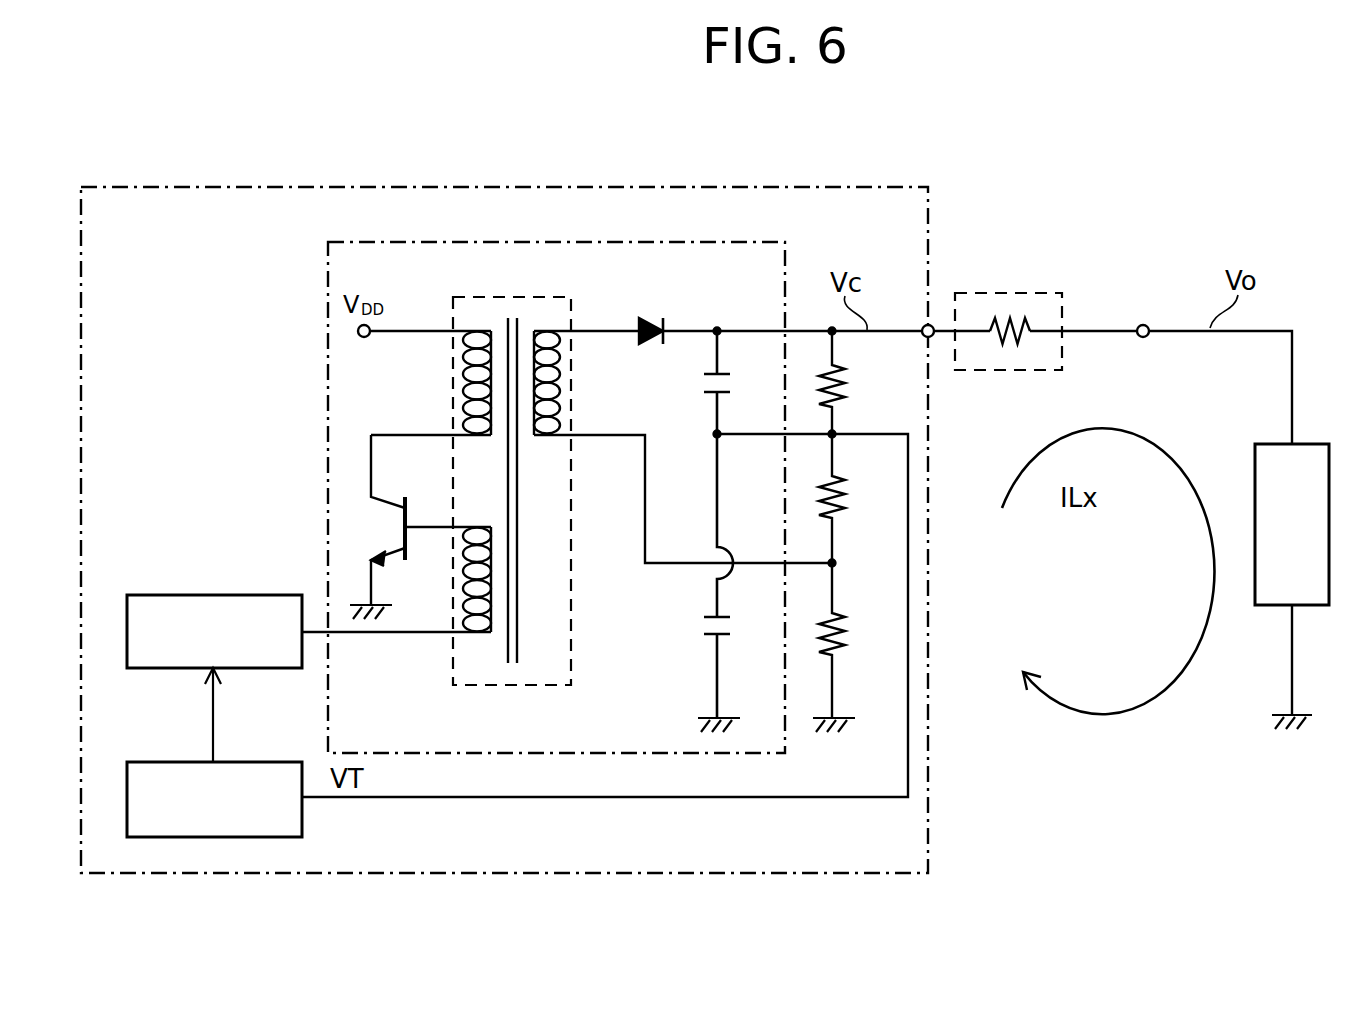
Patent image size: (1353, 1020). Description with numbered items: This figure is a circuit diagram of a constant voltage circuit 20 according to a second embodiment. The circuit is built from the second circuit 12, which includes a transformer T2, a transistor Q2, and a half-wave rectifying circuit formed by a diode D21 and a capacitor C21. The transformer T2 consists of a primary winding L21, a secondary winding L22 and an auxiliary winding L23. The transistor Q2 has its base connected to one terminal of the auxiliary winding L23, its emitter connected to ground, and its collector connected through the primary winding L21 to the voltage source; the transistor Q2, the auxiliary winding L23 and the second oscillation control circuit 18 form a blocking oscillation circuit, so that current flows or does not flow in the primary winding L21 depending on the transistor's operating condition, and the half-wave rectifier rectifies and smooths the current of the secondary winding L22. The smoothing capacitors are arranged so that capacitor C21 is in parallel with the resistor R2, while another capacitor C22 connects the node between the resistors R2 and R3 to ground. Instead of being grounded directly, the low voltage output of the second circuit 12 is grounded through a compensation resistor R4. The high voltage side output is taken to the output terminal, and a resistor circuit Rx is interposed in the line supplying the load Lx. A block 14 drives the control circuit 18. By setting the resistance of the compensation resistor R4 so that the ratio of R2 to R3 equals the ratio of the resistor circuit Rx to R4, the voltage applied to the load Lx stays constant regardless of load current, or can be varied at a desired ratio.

The second circuit 12 is at (326, 462).
The comparison operation circuit 14 is at (157, 762).
The second oscillation control circuit 18 is at (252, 595).
The constant voltage circuit 20 is at (930, 762).
The transformer T2 is at (512, 473).
The primary winding L21 is at (465, 380).
The secondary winding L22 is at (562, 371).
The auxiliary winding L23 is at (463, 578).
The transistor Q2 is at (417, 527).
The diode D21 is at (625, 313).
The capacitor C21 is at (692, 382).
The capacitor C22 is at (695, 583).
The resistor R2 is at (854, 382).
The resistor R3 is at (854, 498).
The compensation resistor R4 is at (851, 647).
The resistor circuit Rx is at (1020, 318).
The load Lx is at (1310, 443).